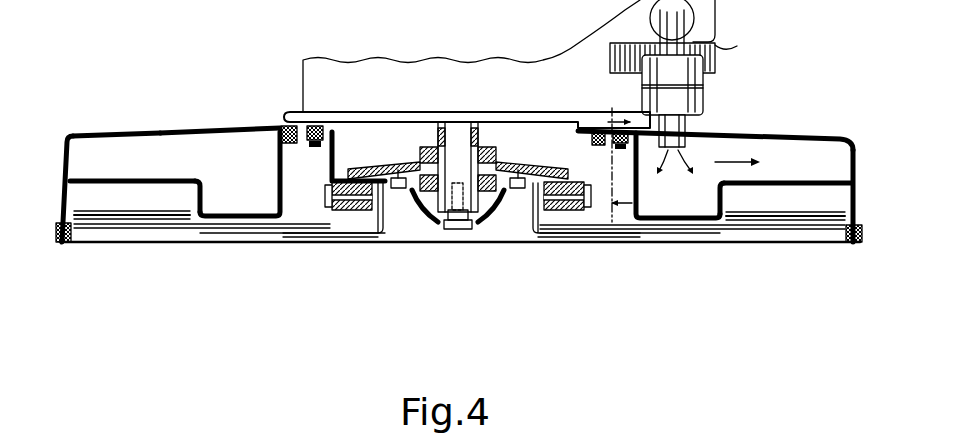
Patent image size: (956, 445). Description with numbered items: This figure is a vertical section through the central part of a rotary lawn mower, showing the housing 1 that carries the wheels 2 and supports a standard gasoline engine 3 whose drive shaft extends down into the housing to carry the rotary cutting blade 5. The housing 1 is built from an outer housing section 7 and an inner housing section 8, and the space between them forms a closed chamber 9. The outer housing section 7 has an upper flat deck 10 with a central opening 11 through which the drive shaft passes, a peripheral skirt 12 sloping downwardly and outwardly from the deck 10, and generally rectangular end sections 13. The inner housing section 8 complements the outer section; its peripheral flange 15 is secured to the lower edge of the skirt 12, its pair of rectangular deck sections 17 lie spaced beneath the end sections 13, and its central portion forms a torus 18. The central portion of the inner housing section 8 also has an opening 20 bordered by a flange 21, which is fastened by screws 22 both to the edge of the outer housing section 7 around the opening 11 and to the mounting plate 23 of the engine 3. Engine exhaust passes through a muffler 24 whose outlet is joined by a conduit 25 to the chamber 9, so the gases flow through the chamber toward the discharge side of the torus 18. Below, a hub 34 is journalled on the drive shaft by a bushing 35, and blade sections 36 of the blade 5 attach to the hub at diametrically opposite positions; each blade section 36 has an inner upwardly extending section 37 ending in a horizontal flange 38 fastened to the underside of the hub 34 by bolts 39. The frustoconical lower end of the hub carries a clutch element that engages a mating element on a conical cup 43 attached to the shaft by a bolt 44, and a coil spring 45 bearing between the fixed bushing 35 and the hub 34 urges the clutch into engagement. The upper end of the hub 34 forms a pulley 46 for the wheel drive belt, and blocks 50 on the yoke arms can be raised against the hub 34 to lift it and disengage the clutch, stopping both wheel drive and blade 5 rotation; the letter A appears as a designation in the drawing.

The housing 1 is at (798, 126).
The wheels 2 is at (760, 24).
The gasoline engine 3 is at (418, 66).
The rotary cutting blade 5 is at (628, 312).
The outer housing section 7 is at (67, 132).
The inner housing section 8 is at (197, 189).
The chamber 9 is at (253, 143).
The deck 10 is at (175, 130).
The central opening 11 is at (355, 126).
The peripheral skirt 12 is at (69, 166).
The end sections 13 is at (108, 138).
The peripheral flange 15 is at (87, 240).
The deck sections 17 is at (140, 179).
The torus 18 is at (168, 190).
The opening 20 is at (287, 244).
The flange 21 is at (288, 128).
The screws 22 is at (289, 145).
The mounting plate 23 is at (297, 127).
The muffler 24 is at (705, 67).
The conduit 25 is at (688, 127).
The hub 34 is at (531, 156).
The bushing 35 is at (480, 152).
The blade sections 36 is at (178, 230).
The upwardly extending section 37 is at (383, 235).
The horizontal flange 38 is at (520, 190).
The bolts 39 is at (398, 190).
The conical cup 43 is at (498, 220).
The bolt 44 is at (458, 231).
The coil spring 45 is at (457, 152).
The pulley 46 is at (420, 152).
The block 50 is at (357, 209).
The axis A is at (467, 130).